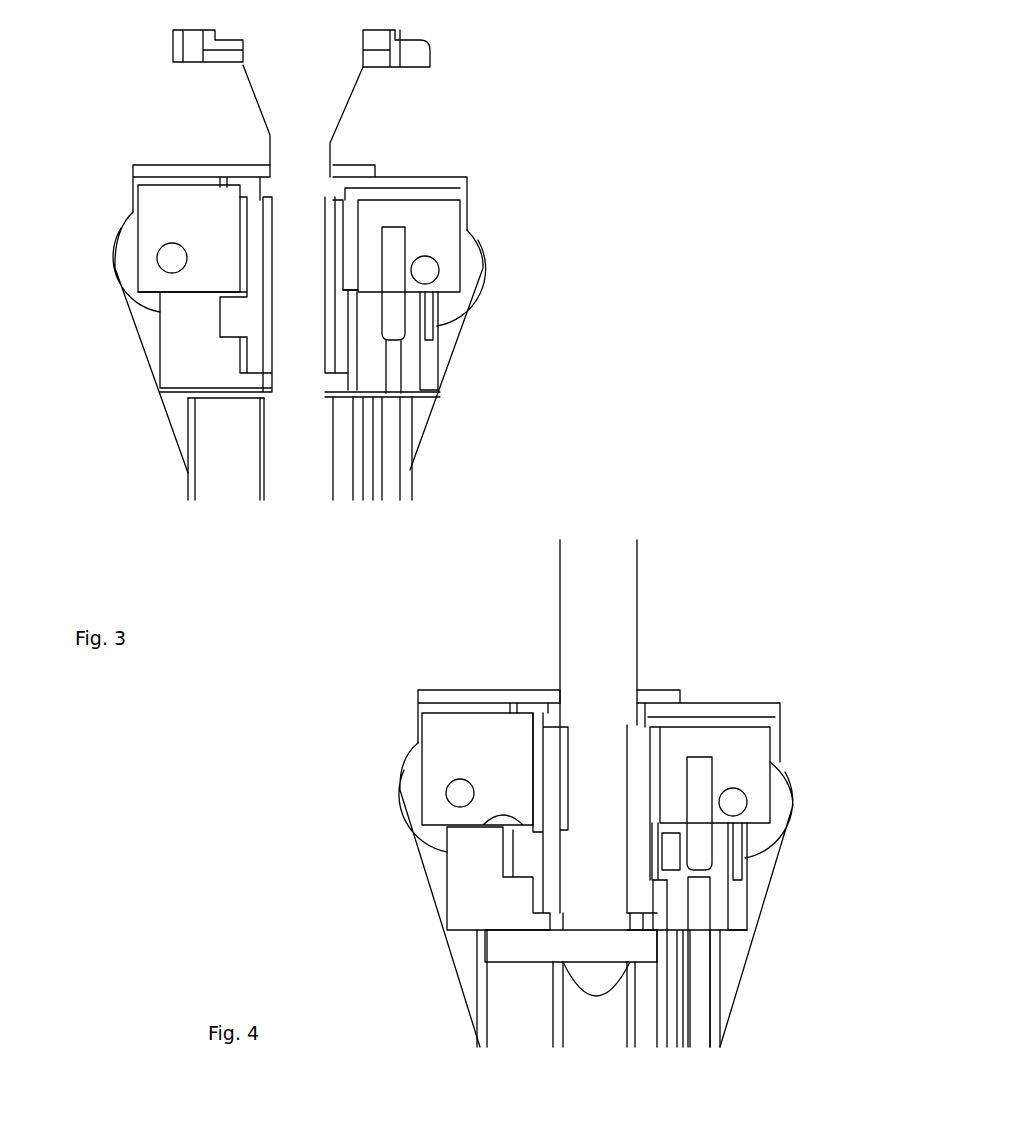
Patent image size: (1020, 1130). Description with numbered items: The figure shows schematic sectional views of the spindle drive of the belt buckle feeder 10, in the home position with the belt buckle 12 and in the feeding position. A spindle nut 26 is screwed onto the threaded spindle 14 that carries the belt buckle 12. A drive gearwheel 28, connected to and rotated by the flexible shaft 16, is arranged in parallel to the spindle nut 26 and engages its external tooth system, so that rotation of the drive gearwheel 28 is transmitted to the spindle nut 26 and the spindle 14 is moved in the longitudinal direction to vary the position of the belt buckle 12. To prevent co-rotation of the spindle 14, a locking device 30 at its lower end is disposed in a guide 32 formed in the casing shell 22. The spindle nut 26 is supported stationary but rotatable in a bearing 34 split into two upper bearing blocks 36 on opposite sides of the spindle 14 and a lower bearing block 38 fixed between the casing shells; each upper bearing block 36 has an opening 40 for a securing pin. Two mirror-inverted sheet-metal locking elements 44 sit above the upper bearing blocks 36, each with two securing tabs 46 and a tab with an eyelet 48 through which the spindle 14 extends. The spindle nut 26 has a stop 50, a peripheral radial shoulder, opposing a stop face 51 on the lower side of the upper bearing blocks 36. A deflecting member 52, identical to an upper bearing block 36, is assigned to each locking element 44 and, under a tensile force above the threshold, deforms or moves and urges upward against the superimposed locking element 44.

In FIG. 3, the belt buckle feeder 10 is at (583, 63).
In FIG. 4, the belt buckle feeder 10 is at (675, 567).
In FIG. 3, the belt buckle 12 is at (173, 43).
In FIG. 3, the spindle 14 is at (287, 150).
In FIG. 4, the spindle 14 is at (587, 677).
In FIG. 3, the flexible shaft 16 is at (390, 477).
In FIG. 4, the flexible shaft 16 is at (695, 1003).
In FIG. 3, the casing shell 22 is at (420, 410).
In FIG. 4, the casing shell 22 is at (730, 950).
In FIG. 3, the spindle nut 26 is at (450, 200).
In FIG. 4, the spindle nut 26 is at (765, 728).
In FIG. 3, the drive gearwheel 28 is at (410, 365).
In FIG. 4, the drive gearwheel 28 is at (713, 893).
In FIG. 4, the locking device 30 is at (500, 945).
In FIG. 4, the guide 32 is at (505, 1020).
In FIG. 3, the bearing 34 is at (505, 292).
In FIG. 4, the bearing 34 is at (385, 828).
In FIG. 3, the upper bearing block 36 is at (344, 231).
In FIG. 4, the upper bearing block 36 is at (606, 791).
In FIG. 3, the lower bearing block 38 is at (185, 370).
In FIG. 4, the lower bearing block 38 is at (483, 905).
In FIG. 3, the opening 40 is at (172, 258).
In FIG. 4, the opening 40 is at (460, 793).
In FIG. 3, the locking element 44 is at (152, 165).
In FIG. 4, the locking element 44 is at (455, 692).
In FIG. 3, the securing tab 46 is at (118, 253).
In FIG. 4, the securing tab 46 is at (400, 786).
In FIG. 3, the eyelet 48 is at (340, 168).
In FIG. 4, the eyelet 48 is at (648, 695).
In FIG. 4, the stop 50 is at (485, 895).
In FIG. 4, the stop face 51 is at (480, 822).
In FIG. 3, the deflecting member 52 is at (150, 207).
In FIG. 4, the deflecting member 52 is at (425, 735).